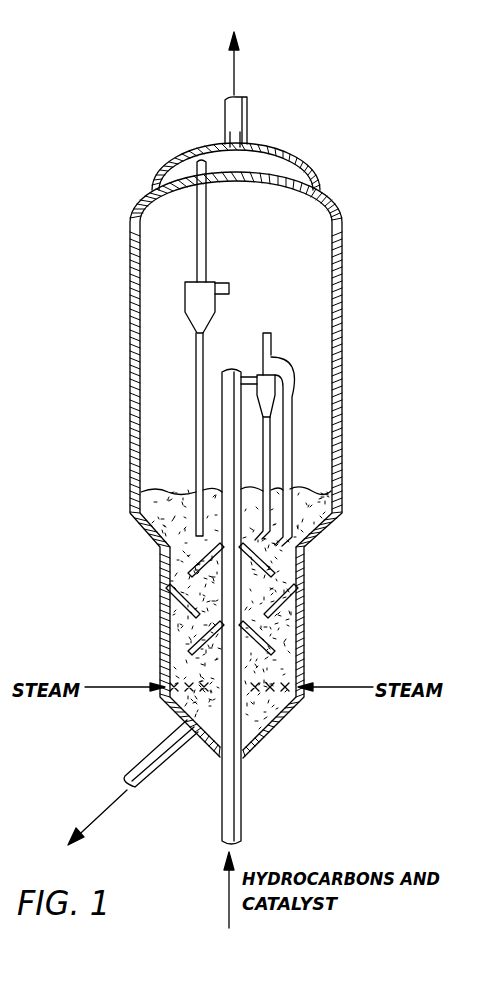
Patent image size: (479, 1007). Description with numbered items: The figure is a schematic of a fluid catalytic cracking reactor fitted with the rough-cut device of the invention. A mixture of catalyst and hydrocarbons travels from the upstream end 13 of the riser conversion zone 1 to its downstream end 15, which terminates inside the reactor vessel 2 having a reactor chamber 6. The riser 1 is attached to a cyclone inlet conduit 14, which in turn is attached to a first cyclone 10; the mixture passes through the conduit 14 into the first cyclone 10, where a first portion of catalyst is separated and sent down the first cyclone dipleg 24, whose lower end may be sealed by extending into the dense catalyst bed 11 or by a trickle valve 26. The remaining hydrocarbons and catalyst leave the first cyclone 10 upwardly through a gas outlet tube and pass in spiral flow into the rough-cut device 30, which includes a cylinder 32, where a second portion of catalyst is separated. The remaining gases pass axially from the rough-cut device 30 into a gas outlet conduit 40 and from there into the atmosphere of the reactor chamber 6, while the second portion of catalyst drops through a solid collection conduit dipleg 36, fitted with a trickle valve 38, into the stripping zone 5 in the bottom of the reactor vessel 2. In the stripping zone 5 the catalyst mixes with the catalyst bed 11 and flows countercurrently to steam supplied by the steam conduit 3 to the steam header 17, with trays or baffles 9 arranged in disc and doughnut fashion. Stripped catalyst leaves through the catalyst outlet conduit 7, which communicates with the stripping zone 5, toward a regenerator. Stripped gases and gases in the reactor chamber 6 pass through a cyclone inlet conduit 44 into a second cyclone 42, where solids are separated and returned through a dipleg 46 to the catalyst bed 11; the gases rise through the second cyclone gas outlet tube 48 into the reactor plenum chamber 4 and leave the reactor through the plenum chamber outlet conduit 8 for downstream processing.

The riser conversion zone 1 is at (236, 832).
The reactor vessel 2 is at (315, 128).
The steam conduit 3 is at (329, 712).
The reactor plenum chamber 4 is at (168, 159).
The stripping zone 5 is at (288, 641).
The reactor chamber 6 is at (342, 275).
The catalyst outlet conduit 7 is at (146, 759).
The plenum chamber outlet conduit 8 is at (228, 116).
The baffles 9 is at (180, 584).
The first cyclone 10 is at (279, 385).
The dense catalyst bed 11 is at (296, 614).
The upstream end 13 is at (218, 826).
The cyclone inlet conduit 14 is at (250, 376).
The downstream end 15 is at (220, 380).
The steam header 17 is at (296, 682).
The first cyclone dipleg 24 is at (270, 469).
The trickle valve 26 is at (289, 564).
The rough-cut device 30 is at (282, 368).
The cylinder 32 is at (263, 347).
The solid collection conduit dipleg 36 is at (292, 474).
The trickle valve 38 is at (306, 538).
The gas outlet conduit 40 is at (270, 334).
The second cyclone 42 is at (185, 282).
The cyclone inlet conduit 44 is at (224, 284).
The dipleg 46 is at (196, 355).
The second cyclone gas outlet tube 48 is at (199, 225).